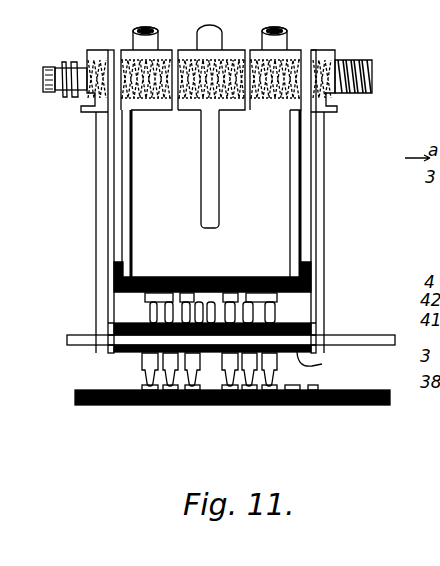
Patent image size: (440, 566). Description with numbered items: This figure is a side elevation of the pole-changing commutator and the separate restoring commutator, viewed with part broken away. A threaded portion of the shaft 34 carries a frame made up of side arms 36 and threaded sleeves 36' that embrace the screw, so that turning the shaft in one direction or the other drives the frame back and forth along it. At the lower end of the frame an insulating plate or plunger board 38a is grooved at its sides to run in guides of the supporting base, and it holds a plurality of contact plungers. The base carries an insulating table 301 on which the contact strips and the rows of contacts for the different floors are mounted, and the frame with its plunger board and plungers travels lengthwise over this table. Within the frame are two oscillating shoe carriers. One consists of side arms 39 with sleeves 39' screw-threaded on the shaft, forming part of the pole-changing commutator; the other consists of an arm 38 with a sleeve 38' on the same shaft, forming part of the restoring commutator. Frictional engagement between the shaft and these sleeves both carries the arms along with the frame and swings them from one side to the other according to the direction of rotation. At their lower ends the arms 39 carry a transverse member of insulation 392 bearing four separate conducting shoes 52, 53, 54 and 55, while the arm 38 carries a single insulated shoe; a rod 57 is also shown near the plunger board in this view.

The shaft 34 is at (372, 76).
The side arms 36 is at (213, 201).
The threaded sleeves 36' is at (213, 65).
The arm 38 is at (231, 169).
The sleeve 38' is at (211, 58).
The side arms 39 is at (211, 193).
The sleeves 39' is at (211, 82).
The transverse member of insulation 392 is at (264, 281).
The conducting shoe 52 is at (147, 300).
The conducting shoe 53 is at (190, 302).
The conducting shoe 54 is at (237, 312).
The conducting shoe 55 is at (277, 297).
The rod 57 is at (380, 334).
The plunger board 38a is at (232, 362).
The insulating table 301 is at (303, 405).